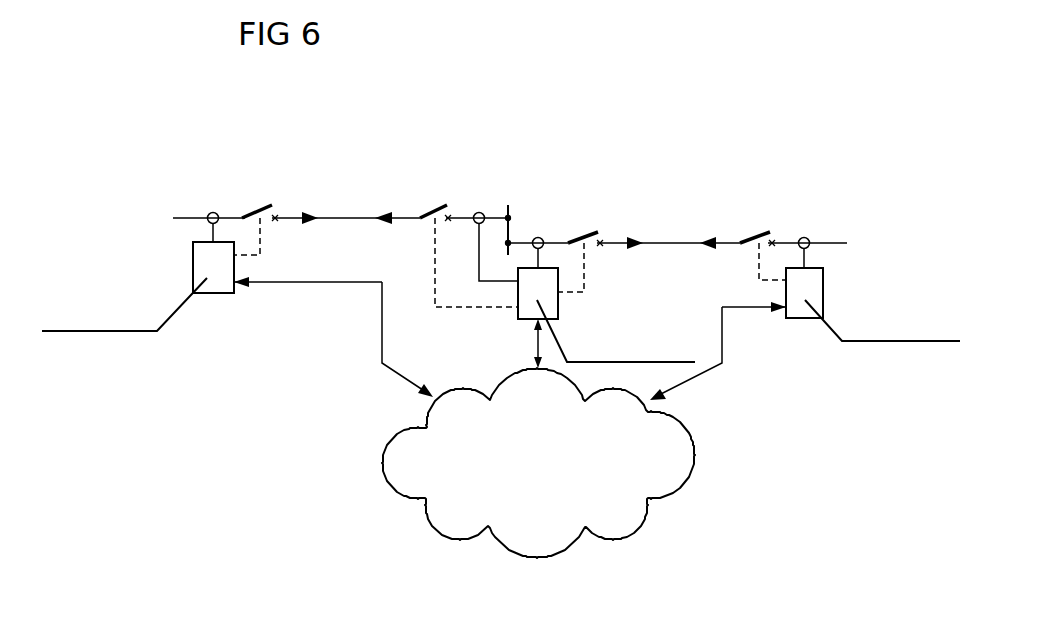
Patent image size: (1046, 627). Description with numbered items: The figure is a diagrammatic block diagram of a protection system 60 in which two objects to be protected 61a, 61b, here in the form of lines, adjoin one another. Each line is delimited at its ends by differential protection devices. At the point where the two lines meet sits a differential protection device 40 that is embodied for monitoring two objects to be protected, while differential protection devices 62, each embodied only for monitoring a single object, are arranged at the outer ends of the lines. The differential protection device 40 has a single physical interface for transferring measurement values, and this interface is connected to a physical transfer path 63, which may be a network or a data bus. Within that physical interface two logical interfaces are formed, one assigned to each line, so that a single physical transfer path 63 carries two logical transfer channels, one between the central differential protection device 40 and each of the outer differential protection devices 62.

The protection system 60 is at (348, 123).
The object to be protected 61a is at (347, 217).
The object to be protected 61b is at (670, 242).
The differential protection device 62 is at (214, 293).
The differential protection device 40 is at (558, 307).
The physical transfer path 63 is at (397, 438).